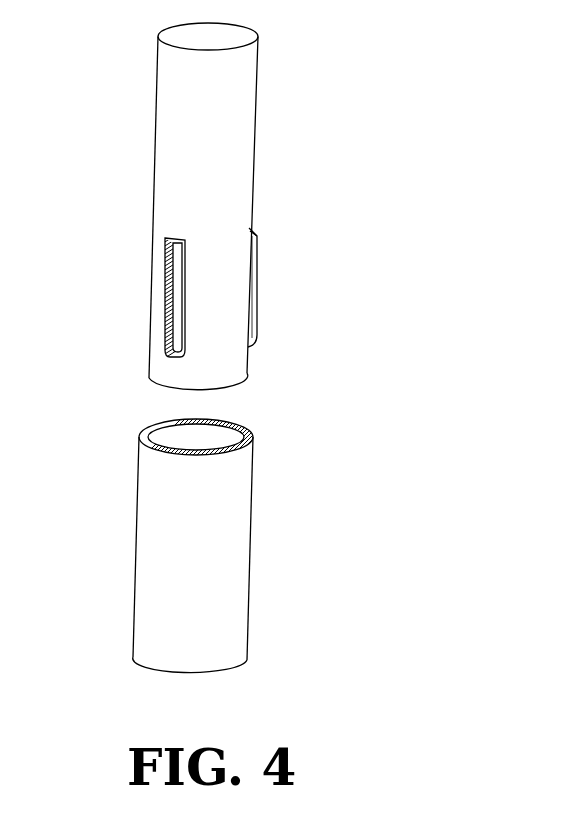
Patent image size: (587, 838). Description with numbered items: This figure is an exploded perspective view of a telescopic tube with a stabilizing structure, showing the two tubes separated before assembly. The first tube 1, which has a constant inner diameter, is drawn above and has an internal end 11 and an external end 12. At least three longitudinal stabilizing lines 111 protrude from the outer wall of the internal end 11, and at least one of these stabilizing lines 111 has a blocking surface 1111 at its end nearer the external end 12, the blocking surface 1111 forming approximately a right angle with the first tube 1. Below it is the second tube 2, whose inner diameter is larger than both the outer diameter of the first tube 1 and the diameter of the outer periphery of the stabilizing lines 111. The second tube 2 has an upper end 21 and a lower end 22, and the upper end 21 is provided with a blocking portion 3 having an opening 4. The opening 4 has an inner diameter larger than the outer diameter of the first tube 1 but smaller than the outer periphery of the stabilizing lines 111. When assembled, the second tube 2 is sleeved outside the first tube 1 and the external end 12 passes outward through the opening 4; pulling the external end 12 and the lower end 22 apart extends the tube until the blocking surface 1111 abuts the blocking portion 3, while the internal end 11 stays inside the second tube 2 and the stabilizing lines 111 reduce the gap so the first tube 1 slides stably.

The first tube 1 is at (210, 201).
The internal end 11 is at (245, 368).
The longitudinal stabilizing lines 111 is at (255, 307).
The blocking surface 1111 is at (252, 232).
The external end 12 is at (257, 68).
The second tube 2 is at (209, 523).
The upper end 21 is at (252, 513).
The lower end 22 is at (250, 645).
The blocking portion 3 is at (250, 430).
The opening 4 is at (175, 440).